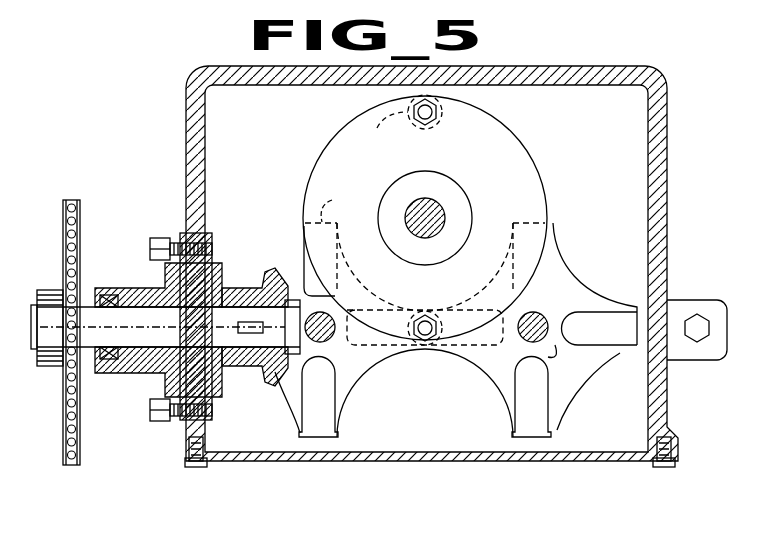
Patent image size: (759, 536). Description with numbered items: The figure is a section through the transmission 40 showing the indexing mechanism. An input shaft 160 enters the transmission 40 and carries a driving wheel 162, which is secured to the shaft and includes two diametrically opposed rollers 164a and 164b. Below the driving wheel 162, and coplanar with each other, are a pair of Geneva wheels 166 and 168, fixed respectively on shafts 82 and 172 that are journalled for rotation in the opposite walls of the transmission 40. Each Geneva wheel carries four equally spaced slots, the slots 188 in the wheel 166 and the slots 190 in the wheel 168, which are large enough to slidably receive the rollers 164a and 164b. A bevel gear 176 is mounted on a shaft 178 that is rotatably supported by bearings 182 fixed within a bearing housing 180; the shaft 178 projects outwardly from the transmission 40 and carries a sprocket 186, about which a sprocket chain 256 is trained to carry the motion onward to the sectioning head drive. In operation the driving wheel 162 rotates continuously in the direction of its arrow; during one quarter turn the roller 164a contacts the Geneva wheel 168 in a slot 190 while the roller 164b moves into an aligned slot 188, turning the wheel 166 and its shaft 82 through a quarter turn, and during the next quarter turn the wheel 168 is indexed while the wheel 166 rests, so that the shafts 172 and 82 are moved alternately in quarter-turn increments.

The transmission 40 is at (585, 68).
The shaft 82 is at (530, 312).
The input shaft 160 is at (442, 215).
The driving wheel 162 is at (512, 174).
The roller 164a is at (397, 122).
The roller 164b is at (403, 309).
The Geneva wheel 166 is at (476, 343).
The Geneva wheel 168 is at (373, 343).
The shaft 172 is at (333, 330).
The bevel gear 176 is at (283, 270).
The shaft 178 is at (127, 318).
The bearing housing 180 is at (130, 370).
The bearings 182 is at (133, 340).
The sprocket 186 is at (82, 235).
The slots 188 is at (555, 266).
The slots 190 is at (390, 173).
The sprocket chain 256 is at (80, 203).